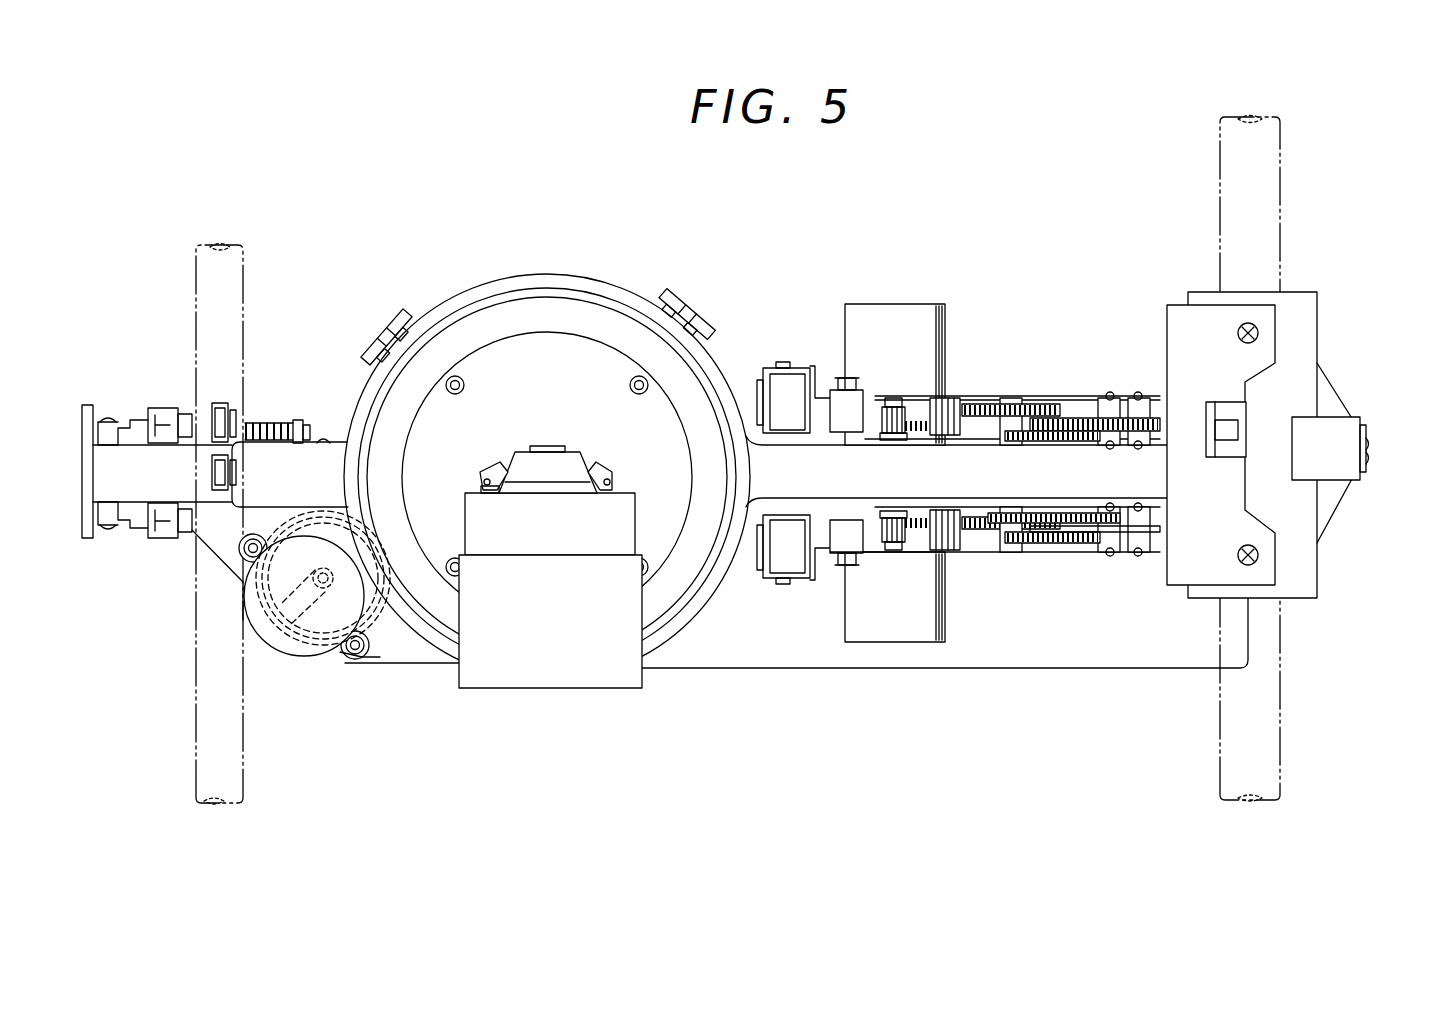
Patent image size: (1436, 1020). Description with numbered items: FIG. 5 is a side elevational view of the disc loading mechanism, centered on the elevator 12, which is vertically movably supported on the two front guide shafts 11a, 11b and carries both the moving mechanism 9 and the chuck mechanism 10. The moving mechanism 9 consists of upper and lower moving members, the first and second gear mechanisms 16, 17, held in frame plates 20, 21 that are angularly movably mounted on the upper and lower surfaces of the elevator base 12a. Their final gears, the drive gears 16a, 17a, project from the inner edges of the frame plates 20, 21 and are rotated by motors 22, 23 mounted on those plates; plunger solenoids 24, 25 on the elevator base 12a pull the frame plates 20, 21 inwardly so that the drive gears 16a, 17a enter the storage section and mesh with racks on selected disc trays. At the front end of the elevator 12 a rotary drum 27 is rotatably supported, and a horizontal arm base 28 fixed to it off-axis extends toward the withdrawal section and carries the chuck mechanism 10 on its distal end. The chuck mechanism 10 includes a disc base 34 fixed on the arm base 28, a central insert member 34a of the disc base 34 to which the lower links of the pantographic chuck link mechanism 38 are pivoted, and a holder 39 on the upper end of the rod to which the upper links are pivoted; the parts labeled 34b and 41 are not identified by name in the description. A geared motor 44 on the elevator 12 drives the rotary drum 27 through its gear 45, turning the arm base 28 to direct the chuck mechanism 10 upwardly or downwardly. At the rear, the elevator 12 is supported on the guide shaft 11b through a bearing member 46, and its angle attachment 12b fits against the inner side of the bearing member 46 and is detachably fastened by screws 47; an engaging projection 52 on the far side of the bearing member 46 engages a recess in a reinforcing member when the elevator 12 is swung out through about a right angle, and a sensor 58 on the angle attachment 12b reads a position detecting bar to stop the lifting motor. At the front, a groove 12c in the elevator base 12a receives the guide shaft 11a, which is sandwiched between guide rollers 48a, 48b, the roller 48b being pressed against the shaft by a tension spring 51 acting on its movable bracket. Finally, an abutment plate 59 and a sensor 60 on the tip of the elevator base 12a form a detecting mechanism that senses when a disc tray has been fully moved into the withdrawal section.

The moving mechanism 9 is at (1038, 324).
The chuck mechanism 10 is at (629, 705).
The guide shaft 11a is at (248, 268).
The guide shaft 11b is at (1287, 178).
The elevator 12 is at (472, 281).
The elevator base 12a is at (773, 468).
The angle attachment 12b is at (1180, 325).
The groove 12c is at (207, 445).
The first gear mechanism 16 is at (1051, 394).
The final gear (drive gear) 16a is at (1042, 443).
The second gear mechanism 17 is at (1036, 566).
The final gear (drive gear) 17a is at (1047, 440).
The frame plate 20 is at (988, 394).
The frame plate 21 is at (1083, 550).
The motor 22 is at (897, 312).
The motor 23 is at (897, 625).
The plunger solenoid 24 is at (790, 386).
The plunger solenoid 25 is at (773, 570).
The rotary drum 27 is at (548, 314).
The arm base 28 is at (527, 686).
The disc base 34 is at (570, 548).
The central insert member 34a is at (575, 472).
The holder base 34b is at (470, 490).
The chuck link mechanism 38 is at (505, 466).
The holder 39 is at (551, 450).
The right link 41 is at (615, 482).
The geared motor 44 is at (300, 655).
The gear 45 is at (394, 600).
The bearing member 46 is at (1310, 321).
The screws 47 is at (1256, 330).
The guide roller 48a is at (222, 404).
The guide roller 48b is at (215, 492).
The tension spring 51 is at (274, 424).
The engaging projection 52 is at (1345, 449).
The sensor 58 is at (1240, 412).
The abutment plate 59 is at (82, 460).
The sensor 60 is at (158, 412).